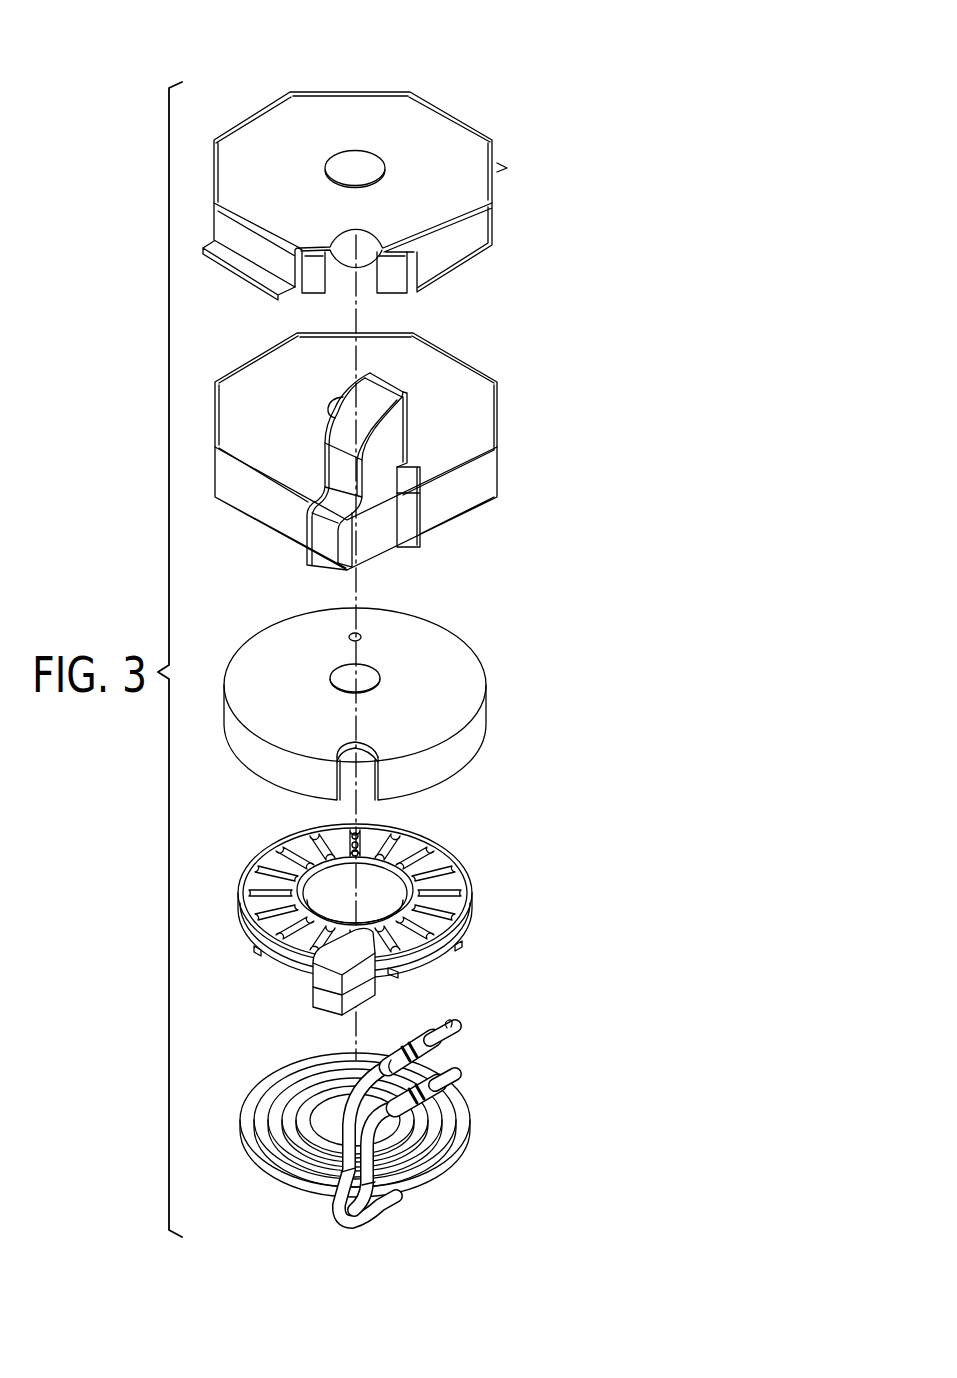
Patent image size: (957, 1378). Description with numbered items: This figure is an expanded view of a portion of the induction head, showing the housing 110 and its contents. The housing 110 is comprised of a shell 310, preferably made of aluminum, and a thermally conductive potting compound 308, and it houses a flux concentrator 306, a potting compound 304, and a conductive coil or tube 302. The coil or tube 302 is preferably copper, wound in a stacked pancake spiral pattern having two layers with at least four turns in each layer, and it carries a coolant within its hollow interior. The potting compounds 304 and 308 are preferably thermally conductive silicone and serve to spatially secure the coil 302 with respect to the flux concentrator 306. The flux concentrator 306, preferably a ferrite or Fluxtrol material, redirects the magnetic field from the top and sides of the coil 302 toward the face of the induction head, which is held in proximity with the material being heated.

The housing 110 is at (485, 71).
The shell 310 is at (483, 128).
The thermally conductive potting compound 308 is at (483, 377).
The flux concentrator 306 is at (457, 660).
The potting compound 304 is at (457, 878).
The conductive coil or tube 302 is at (460, 1110).